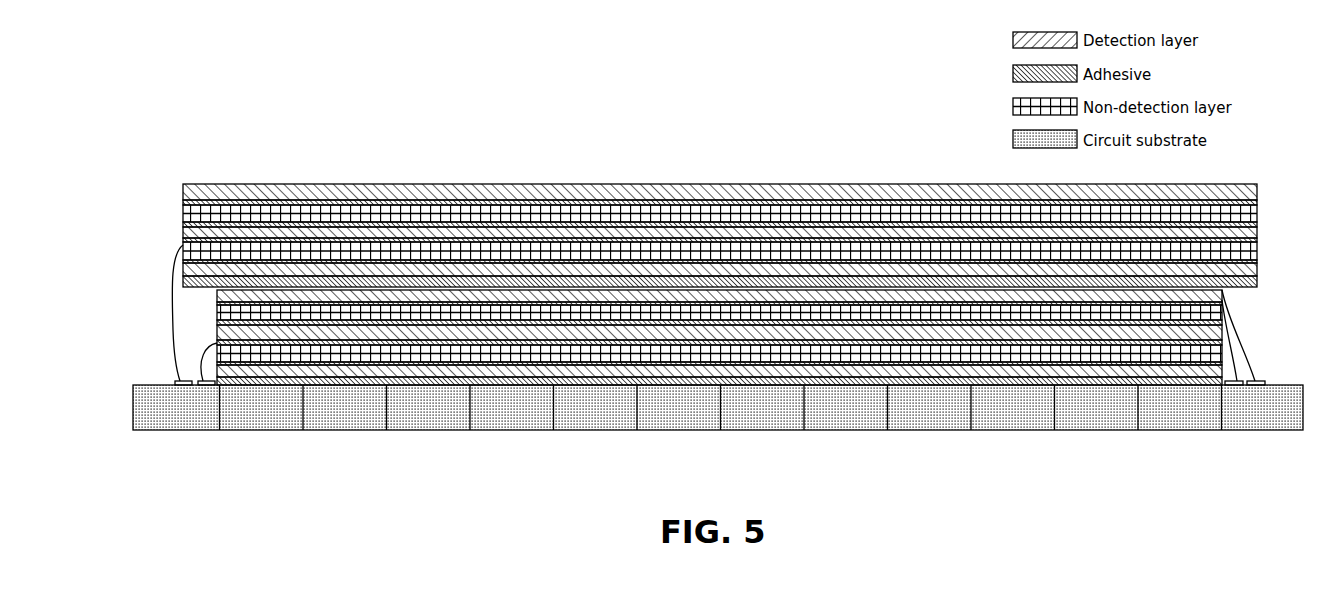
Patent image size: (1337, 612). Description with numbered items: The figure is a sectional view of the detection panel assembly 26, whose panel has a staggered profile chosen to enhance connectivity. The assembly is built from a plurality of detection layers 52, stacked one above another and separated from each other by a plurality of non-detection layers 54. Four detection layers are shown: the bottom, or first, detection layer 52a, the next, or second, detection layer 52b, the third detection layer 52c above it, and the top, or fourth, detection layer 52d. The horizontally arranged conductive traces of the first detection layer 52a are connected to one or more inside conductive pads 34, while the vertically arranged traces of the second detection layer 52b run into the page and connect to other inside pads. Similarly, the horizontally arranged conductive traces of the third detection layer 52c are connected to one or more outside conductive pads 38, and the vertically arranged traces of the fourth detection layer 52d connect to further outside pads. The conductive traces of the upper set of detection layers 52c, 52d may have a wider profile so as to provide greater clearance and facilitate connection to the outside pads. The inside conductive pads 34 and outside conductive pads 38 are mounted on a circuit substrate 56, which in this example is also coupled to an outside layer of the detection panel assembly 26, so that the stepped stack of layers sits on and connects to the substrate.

The detection panel assembly 26 is at (466, 128).
The detection layers 52 is at (136, 190).
The first detection layer 52a is at (217, 342).
The second detection layer 52b is at (217, 290).
The third detection layer 52c is at (183, 246).
The fourth detection layer 52d is at (183, 190).
The non-detection layers 54 is at (1257, 213).
The inside conductive pads 34 is at (205, 386).
The outside conductive pads 38 is at (178, 386).
The circuit substrate 56 is at (418, 430).